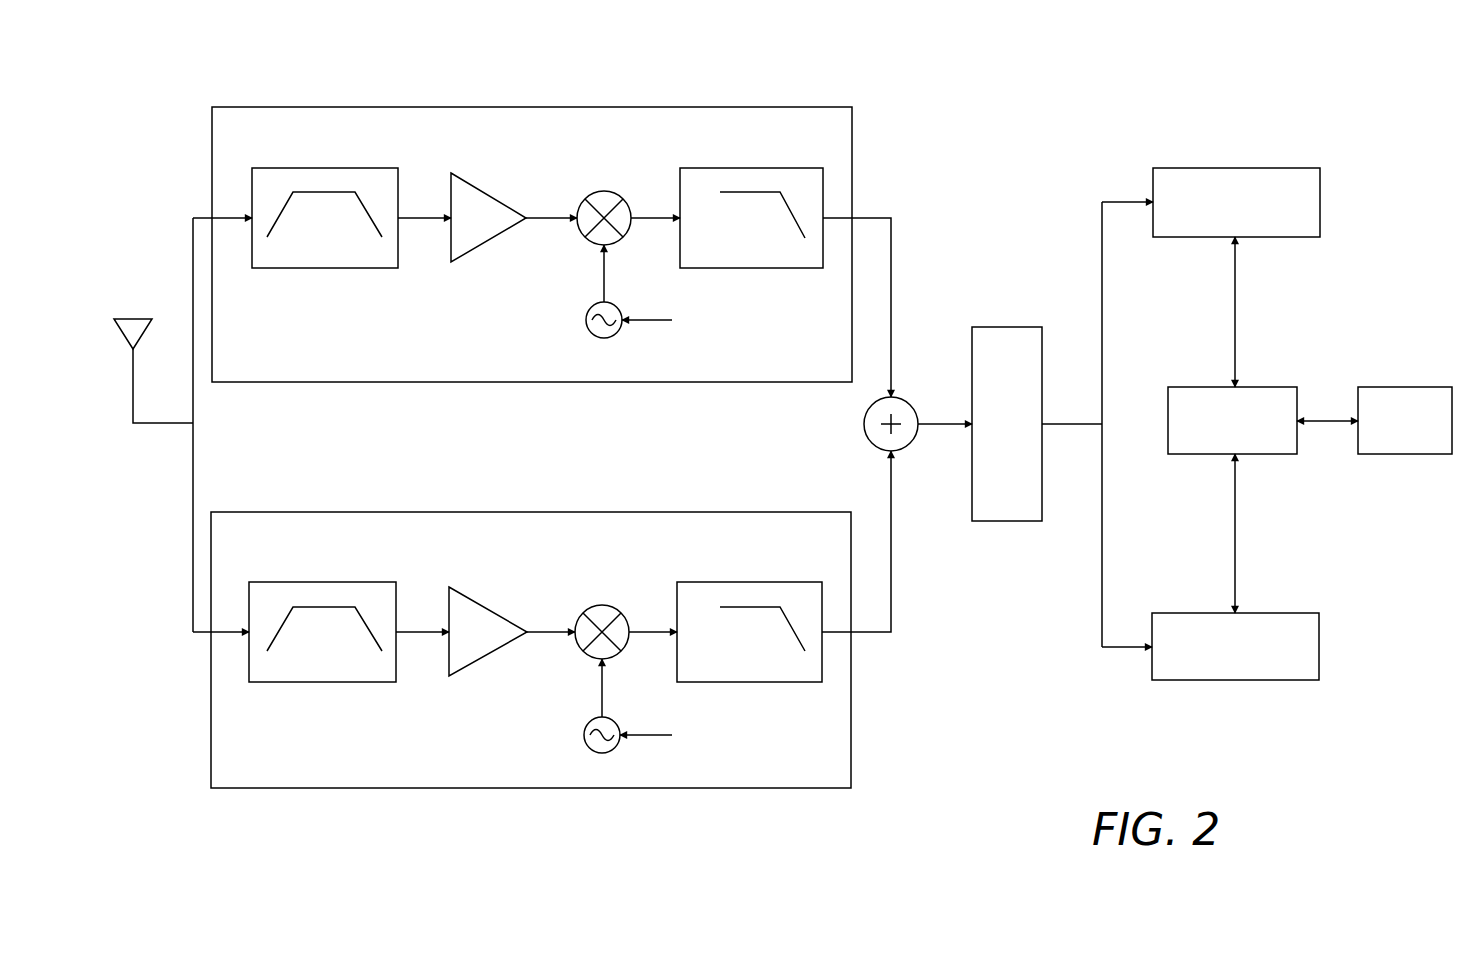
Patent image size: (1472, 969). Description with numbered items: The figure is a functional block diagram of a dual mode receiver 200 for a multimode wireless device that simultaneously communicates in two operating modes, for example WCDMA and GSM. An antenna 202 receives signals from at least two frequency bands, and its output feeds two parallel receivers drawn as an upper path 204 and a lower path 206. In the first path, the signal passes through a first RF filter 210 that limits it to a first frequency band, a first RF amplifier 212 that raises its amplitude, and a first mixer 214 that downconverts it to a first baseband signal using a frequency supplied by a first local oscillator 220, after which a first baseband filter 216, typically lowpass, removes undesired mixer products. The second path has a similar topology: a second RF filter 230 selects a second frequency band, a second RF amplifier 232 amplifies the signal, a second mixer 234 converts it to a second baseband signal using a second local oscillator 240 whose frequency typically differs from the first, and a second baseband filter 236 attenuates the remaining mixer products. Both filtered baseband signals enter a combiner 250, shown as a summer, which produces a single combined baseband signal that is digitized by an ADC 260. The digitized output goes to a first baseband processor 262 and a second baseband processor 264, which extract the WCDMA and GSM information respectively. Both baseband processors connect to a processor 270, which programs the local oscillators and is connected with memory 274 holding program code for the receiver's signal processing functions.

The dual mode receiver 200 is at (1142, 82).
The antenna 202 is at (133, 317).
The first receive path 204 is at (677, 107).
The second receive path 206 is at (593, 790).
The first RF filter 210 is at (330, 167).
The first RF amplifier 212 is at (498, 197).
The first mixer 214 is at (610, 190).
The first baseband filter 216 is at (765, 167).
The first local oscillator 220 is at (585, 320).
The second RF filter 230 is at (326, 580).
The second RF amplifier 232 is at (498, 610).
The second mixer 234 is at (607, 605).
The second baseband filter 236 is at (757, 580).
The second local oscillator 240 is at (583, 735).
The combiner 250 is at (873, 447).
The ADC 260 is at (1013, 522).
The first baseband processor 262 is at (1268, 168).
The second baseband processor 264 is at (1275, 612).
The processor 270 is at (1258, 385).
The memory 274 is at (1395, 386).